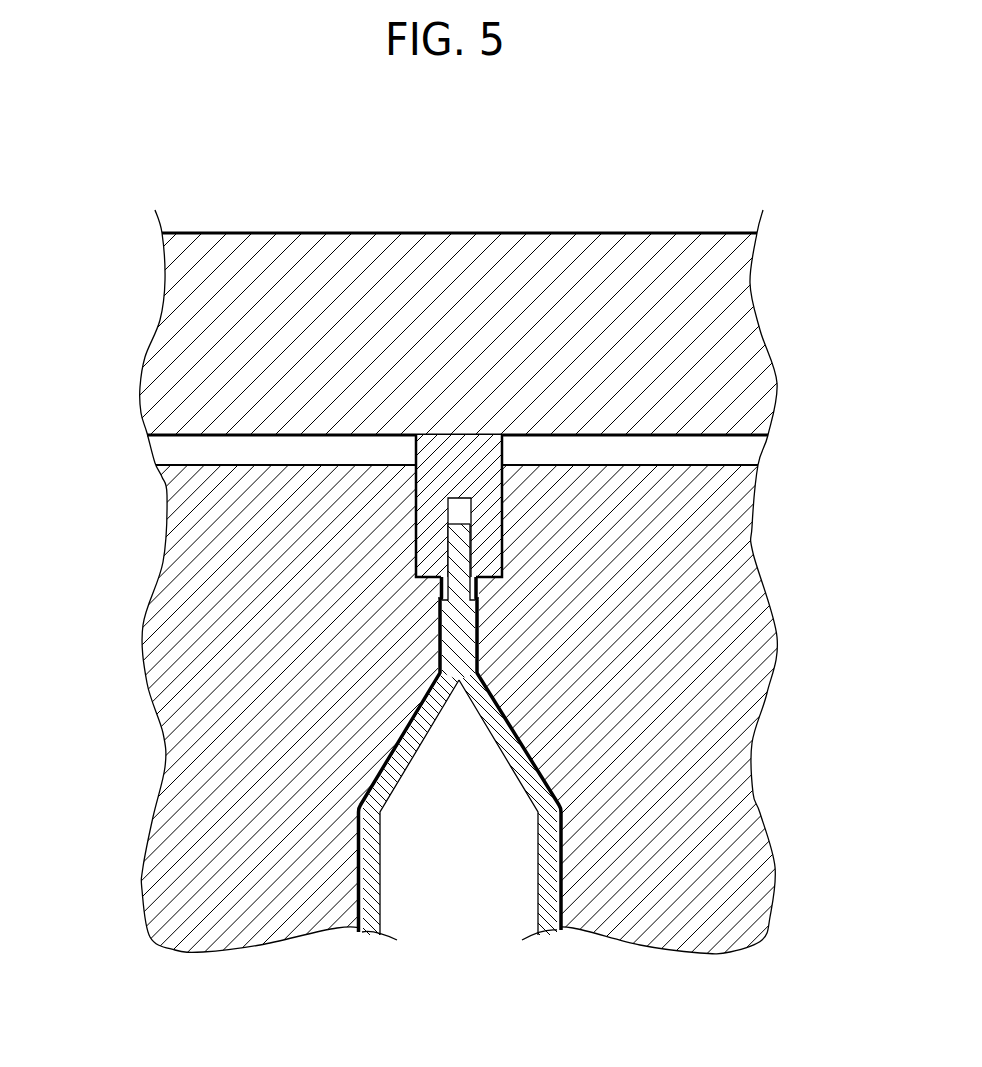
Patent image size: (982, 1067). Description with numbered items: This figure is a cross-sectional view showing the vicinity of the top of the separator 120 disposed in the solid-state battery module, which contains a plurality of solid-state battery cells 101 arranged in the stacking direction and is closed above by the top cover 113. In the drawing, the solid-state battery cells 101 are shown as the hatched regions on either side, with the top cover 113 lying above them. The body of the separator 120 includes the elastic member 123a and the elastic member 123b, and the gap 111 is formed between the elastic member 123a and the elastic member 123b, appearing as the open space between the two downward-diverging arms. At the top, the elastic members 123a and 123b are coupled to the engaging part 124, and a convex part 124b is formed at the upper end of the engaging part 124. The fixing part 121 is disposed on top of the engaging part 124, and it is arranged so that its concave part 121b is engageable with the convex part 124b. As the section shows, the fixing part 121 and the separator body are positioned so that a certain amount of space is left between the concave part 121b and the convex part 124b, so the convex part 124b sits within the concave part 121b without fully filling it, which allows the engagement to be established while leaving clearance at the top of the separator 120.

The solid-state battery cell 101 is at (175, 893).
The gap 111 is at (458, 927).
The top cover 113 is at (742, 290).
The separator 120 is at (340, 595).
The fixing part 121 is at (282, 491).
The concave part 121b is at (448, 522).
The elastic member 123a is at (535, 860).
The elastic member 123b is at (372, 900).
The engaging part 124 is at (270, 602).
The convex part 124b is at (447, 592).